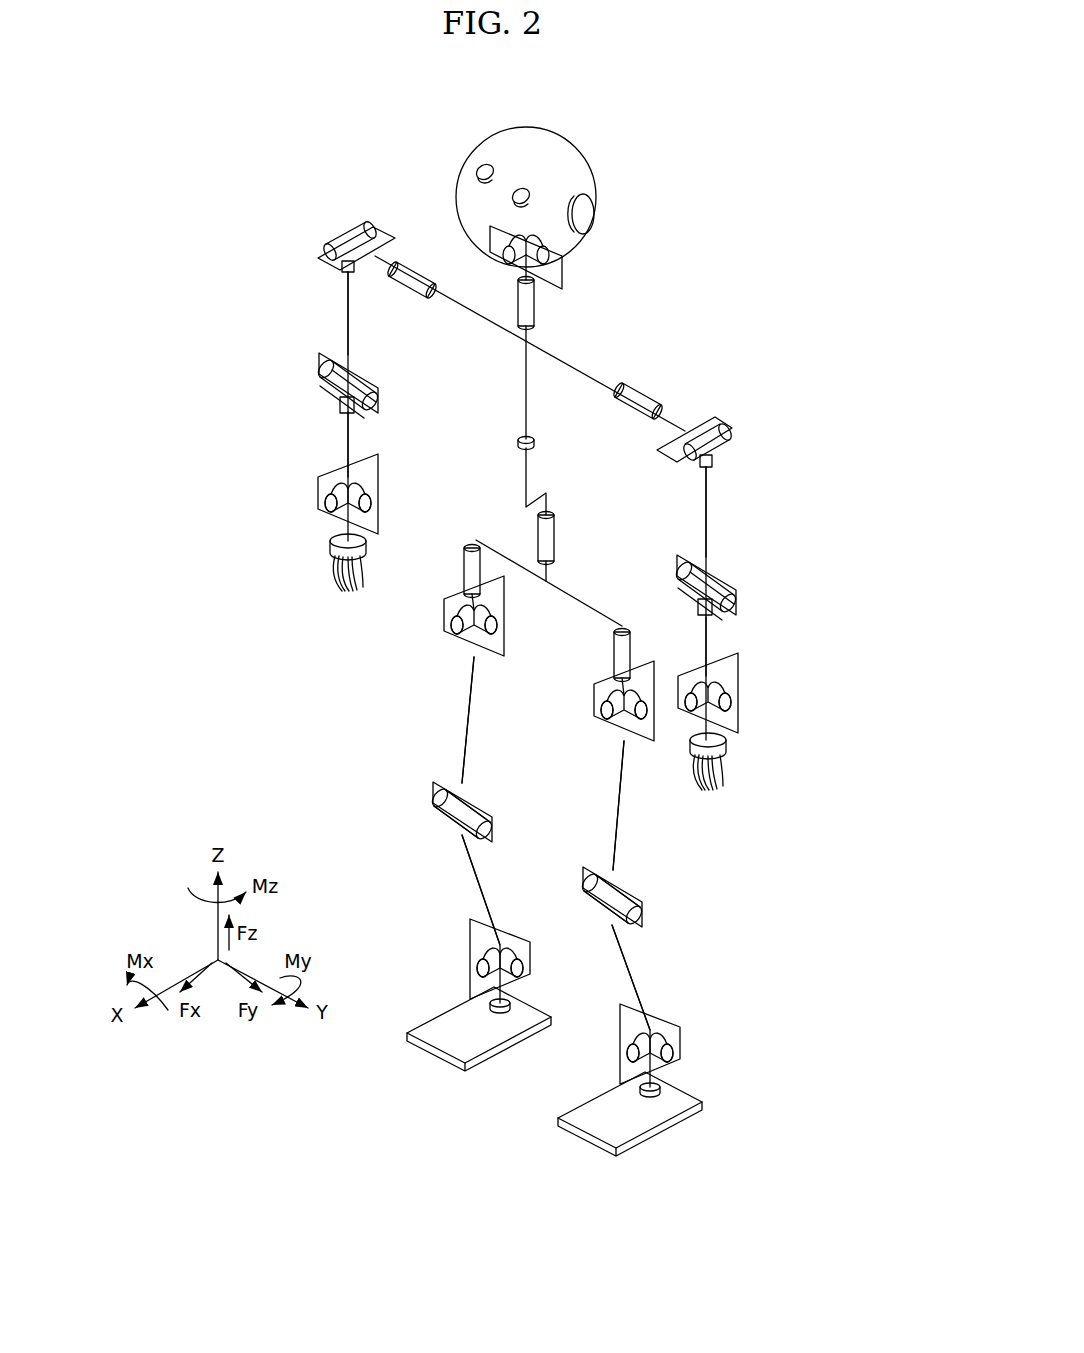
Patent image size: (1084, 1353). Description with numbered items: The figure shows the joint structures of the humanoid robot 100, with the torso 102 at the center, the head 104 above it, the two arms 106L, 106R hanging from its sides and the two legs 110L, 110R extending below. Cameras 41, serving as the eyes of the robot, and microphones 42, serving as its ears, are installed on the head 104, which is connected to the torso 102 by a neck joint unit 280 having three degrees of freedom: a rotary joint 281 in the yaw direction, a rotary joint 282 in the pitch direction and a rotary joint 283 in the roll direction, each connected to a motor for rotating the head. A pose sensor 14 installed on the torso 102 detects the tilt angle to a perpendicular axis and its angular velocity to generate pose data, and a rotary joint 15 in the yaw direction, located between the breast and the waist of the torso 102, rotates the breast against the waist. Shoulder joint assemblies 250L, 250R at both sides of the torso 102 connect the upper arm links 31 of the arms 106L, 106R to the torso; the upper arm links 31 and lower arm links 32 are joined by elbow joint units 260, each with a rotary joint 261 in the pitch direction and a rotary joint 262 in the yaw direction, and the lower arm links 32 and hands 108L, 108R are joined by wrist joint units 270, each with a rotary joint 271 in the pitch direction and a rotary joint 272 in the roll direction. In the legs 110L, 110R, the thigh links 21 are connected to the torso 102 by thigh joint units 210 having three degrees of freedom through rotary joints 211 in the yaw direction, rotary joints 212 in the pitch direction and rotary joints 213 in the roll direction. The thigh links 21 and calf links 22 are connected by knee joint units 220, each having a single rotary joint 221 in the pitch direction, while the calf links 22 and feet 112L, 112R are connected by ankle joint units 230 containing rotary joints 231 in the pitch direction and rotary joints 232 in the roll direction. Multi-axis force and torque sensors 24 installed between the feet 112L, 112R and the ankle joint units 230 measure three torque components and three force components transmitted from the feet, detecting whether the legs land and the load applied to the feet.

The robot 100 is at (814, 148).
The torso 102 is at (524, 411).
The head 104 is at (592, 148).
The right arm 106R is at (243, 377).
The left arm 106L is at (793, 567).
The right hand 108R is at (324, 559).
The left hand 108L is at (742, 759).
The right leg 110R is at (363, 759).
The left leg 110L is at (677, 845).
The right foot 112R is at (435, 1053).
The left foot 112L is at (583, 1137).
The pose sensor 14 is at (534, 443).
The rotary joint in the yaw direction 15 is at (554, 535).
The thigh link 21 is at (467, 731).
The calf link 22 is at (482, 882).
The multi-axis force and torque sensor 24 is at (505, 1012).
The upper arm link 31 is at (346, 307).
The lower arm link 32 is at (346, 437).
The camera 41 is at (514, 198).
The microphone 42 is at (588, 212).
The thigh joint unit 210 is at (432, 625).
The rotary joint in the yaw direction 211 is at (468, 567).
The rotary joint in the pitch direction 212 is at (498, 627).
The rotary joint in the roll direction 213 is at (457, 634).
The knee joint unit 220 is at (422, 832).
The rotary joint in the pitch direction 221 is at (467, 816).
The ankle joint unit 230 is at (458, 955).
The rotary joint in the pitch direction 231 is at (520, 968).
The rotary joint in the roll direction 232 is at (514, 947).
The right shoulder joint assembly 250R is at (347, 212).
The left shoulder joint assembly 250L is at (677, 373).
The elbow joint unit 260 is at (312, 353).
The rotary joint in the pitch direction 261 is at (352, 388).
The rotary joint in the yaw direction 262 is at (354, 413).
The wrist joint unit 270 is at (316, 510).
The rotary joint in the pitch direction 271 is at (370, 508).
The rotary joint in the roll direction 272 is at (368, 491).
The neck joint unit 280 is at (542, 278).
The rotary joint in the yaw direction 281 is at (533, 304).
The rotary joint in the pitch direction 282 is at (554, 249).
The rotary joint in the roll direction 283 is at (487, 252).